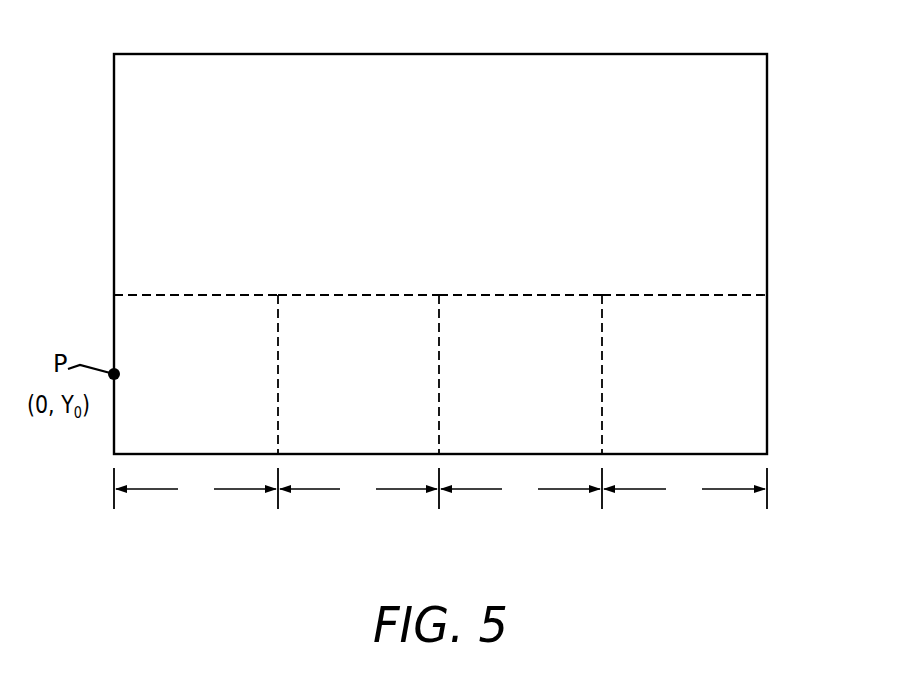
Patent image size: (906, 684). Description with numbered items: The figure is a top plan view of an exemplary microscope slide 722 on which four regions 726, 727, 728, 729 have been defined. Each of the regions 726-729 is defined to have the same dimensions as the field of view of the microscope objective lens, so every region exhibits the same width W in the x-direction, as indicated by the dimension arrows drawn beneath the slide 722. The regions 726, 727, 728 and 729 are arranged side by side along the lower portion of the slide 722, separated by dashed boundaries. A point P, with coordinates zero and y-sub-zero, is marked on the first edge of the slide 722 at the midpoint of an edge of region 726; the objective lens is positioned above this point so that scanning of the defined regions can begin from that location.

The microscope slide 722 is at (313, 53).
The first region 726 is at (196, 402).
The second region 727 is at (358, 402).
The third region 728 is at (520, 402).
The fourth region 729 is at (684, 402).